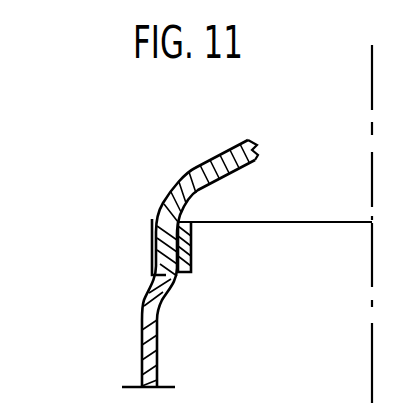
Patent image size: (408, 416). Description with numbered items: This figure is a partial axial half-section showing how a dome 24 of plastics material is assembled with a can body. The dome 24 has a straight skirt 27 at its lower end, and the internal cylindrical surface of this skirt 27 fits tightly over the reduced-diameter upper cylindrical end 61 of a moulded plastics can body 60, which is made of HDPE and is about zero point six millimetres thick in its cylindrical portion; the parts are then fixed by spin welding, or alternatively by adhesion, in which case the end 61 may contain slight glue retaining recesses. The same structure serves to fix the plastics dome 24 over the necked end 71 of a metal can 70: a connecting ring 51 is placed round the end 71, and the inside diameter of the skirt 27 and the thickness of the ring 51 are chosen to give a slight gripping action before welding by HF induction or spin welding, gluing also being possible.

The dome 24 is at (215, 164).
The straight skirt 27 is at (156, 247).
The connecting ring 51 is at (156, 249).
The upper cylindrical end 61 is at (228, 263).
The necked end 71 is at (193, 252).
The can body 60 is at (93, 353).
The metal can 70 is at (143, 331).